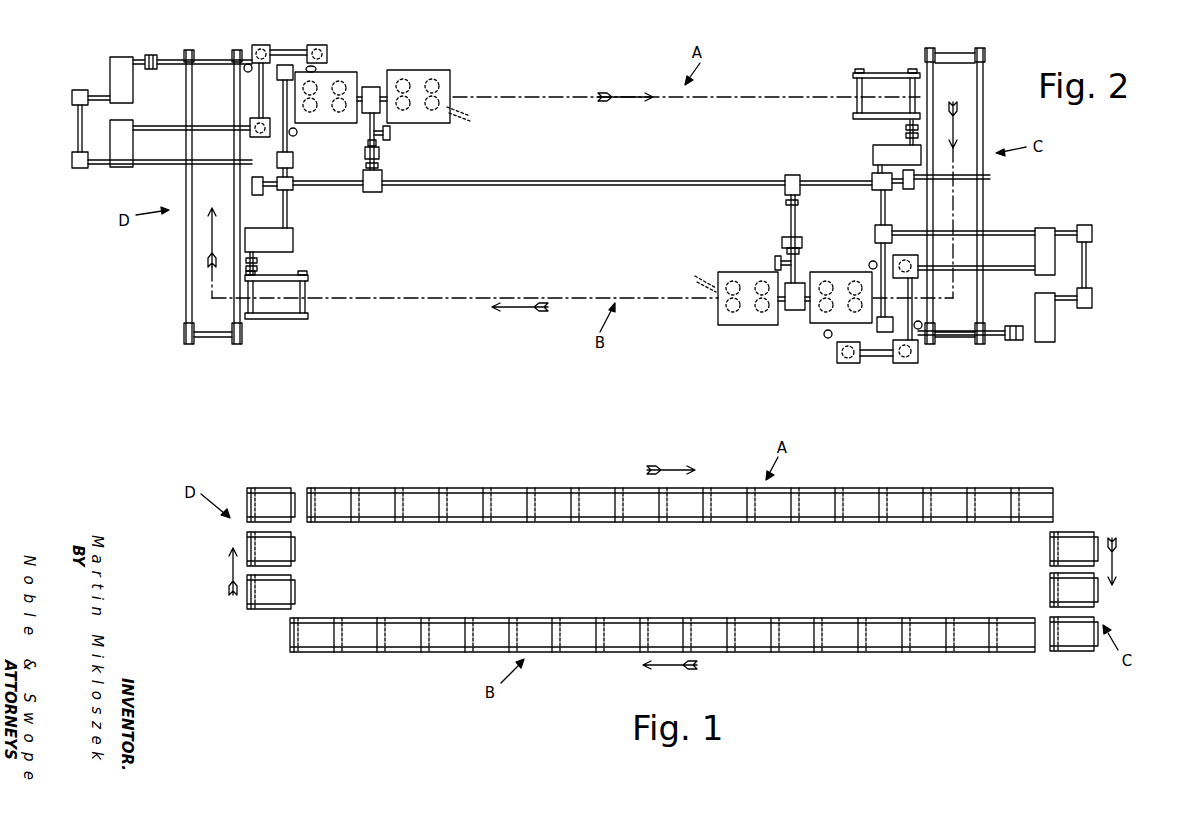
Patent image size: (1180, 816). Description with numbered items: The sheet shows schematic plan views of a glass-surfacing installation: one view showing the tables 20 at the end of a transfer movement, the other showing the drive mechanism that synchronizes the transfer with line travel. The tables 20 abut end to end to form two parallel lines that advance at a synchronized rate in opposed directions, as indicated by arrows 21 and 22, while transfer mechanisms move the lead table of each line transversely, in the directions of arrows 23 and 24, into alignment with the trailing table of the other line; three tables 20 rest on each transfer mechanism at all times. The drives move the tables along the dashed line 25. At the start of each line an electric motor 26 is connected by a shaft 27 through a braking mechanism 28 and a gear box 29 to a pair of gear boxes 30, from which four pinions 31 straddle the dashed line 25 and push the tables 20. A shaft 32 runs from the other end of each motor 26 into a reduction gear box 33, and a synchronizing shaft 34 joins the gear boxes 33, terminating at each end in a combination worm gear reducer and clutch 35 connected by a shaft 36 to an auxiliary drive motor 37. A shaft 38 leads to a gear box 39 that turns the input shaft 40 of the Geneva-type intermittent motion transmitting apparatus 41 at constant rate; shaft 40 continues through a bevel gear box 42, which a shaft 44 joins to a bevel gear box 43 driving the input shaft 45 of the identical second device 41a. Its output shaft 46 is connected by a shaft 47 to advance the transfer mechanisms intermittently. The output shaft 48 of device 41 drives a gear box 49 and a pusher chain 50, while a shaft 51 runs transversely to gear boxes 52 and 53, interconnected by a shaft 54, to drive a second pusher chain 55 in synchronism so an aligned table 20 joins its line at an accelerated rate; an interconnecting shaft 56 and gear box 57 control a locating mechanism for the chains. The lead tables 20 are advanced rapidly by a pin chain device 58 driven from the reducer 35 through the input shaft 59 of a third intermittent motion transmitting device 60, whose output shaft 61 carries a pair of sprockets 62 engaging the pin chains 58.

In FIG. 1, the table 20 is at (282, 590).
In FIG. 2, the arrow 21 is at (626, 88).
In FIG. 1, the arrow 21 is at (673, 467).
In FIG. 2, the arrow 22 is at (530, 313).
In FIG. 1, the arrow 22 is at (668, 668).
In FIG. 2, the arrow 23 is at (961, 133).
In FIG. 1, the arrow 23 is at (1114, 565).
In FIG. 2, the arrow 24 is at (208, 231).
In FIG. 1, the arrow 24 is at (229, 568).
In FIG. 2, the dashed line 25 is at (432, 300).
In FIG. 2, the electric motor 26 is at (790, 237).
In FIG. 2, the shaft 27 is at (380, 152).
In FIG. 2, the braking mechanism 28 is at (391, 132).
In FIG. 2, the gear box 29 is at (373, 87).
In FIG. 2, the gear box 30 is at (436, 78).
In FIG. 2, the pinion 31 is at (581, 199).
In FIG. 2, the shaft 32 is at (380, 166).
In FIG. 2, the reduction gear box 33 is at (378, 189).
In FIG. 2, the synchronizing shaft 34 is at (348, 187).
In FIG. 2, the combination worm gear reducer and clutch 35 is at (288, 189).
In FIG. 2, the shaft 36 is at (268, 190).
In FIG. 2, the auxiliary drive motor 37 is at (252, 185).
In FIG. 2, the shaft 38 is at (289, 172).
In FIG. 2, the gear box 39 is at (294, 156).
In FIG. 2, the input shaft 40 is at (148, 166).
In FIG. 2, the intermittent motion transmitting apparatus 41 is at (118, 129).
In FIG. 2, the second intermittent motion transmitting device 41a is at (118, 64).
In FIG. 2, the bevel gear box 42 is at (72, 160).
In FIG. 2, the bevel gear box 43 is at (72, 97).
In FIG. 2, the shaft 44 is at (78, 130).
In FIG. 2, the input shaft 45 is at (101, 91).
In FIG. 2, the output shaft 46 is at (138, 57).
In FIG. 2, the shaft 47 is at (162, 58).
In FIG. 2, the output shaft 48 is at (146, 126).
In FIG. 2, the gear box 49 is at (913, 228).
In FIG. 2, the pusher chain 50 is at (298, 133).
In FIG. 2, the shaft 51 is at (257, 102).
In FIG. 2, the gear box 52 is at (252, 47).
In FIG. 2, the gear box 53 is at (327, 50).
In FIG. 2, the shaft 54 is at (295, 51).
In FIG. 2, the second pusher chain 55 is at (316, 70).
In FIG. 2, the interconnecting shaft 56 is at (282, 88).
In FIG. 2, the gear box 57 is at (285, 65).
In FIG. 2, the pin chain device 58 is at (289, 321).
In FIG. 2, the input shaft 59 is at (290, 218).
In FIG. 2, the third intermittent motion transmitting device 60 is at (290, 240).
In FIG. 2, the output shaft 61 is at (258, 261).
In FIG. 2, the sprocket 62 is at (255, 320).